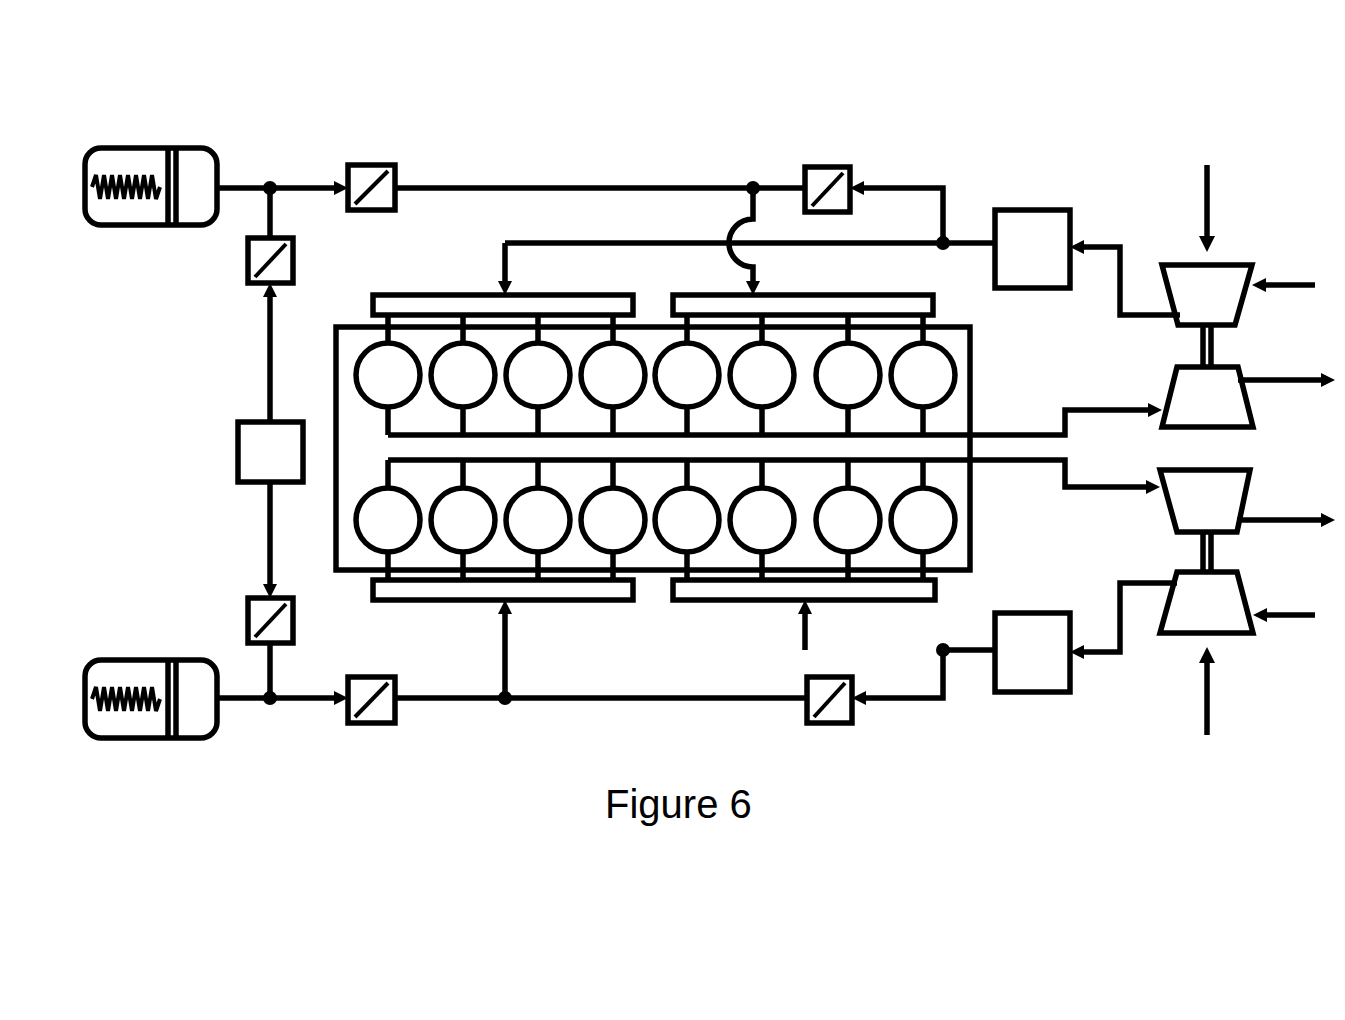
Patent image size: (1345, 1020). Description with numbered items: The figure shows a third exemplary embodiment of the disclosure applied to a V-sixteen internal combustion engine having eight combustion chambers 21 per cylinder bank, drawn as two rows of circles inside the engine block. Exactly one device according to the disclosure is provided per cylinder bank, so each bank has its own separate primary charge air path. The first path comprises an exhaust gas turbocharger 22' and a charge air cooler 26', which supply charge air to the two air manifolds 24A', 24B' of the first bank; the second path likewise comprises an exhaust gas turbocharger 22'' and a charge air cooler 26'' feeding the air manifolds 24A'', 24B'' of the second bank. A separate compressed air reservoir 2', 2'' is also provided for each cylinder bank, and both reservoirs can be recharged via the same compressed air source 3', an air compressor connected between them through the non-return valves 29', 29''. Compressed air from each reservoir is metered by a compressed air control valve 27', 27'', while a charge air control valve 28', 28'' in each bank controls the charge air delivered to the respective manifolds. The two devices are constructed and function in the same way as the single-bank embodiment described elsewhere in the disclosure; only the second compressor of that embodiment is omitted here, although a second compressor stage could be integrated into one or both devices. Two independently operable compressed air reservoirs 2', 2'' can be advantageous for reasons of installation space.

The compressed air reservoir 2' is at (109, 160).
The compressed air reservoir 2'' is at (109, 659).
The compressed air source 3' is at (270, 452).
The combustion chamber 21 is at (933, 531).
The exhaust gas turbocharger 22' is at (1221, 208).
The exhaust gas turbocharger 22'' is at (1224, 691).
The air manifold 24A' is at (494, 288).
The air manifold 24B' is at (803, 301).
The air manifold 24A'' is at (503, 610).
The air manifold 24B'' is at (804, 598).
The charge air cooler 26' is at (989, 212).
The charge air cooler 26'' is at (1021, 684).
The compressed air control valve 27' is at (325, 156).
The compressed air control valve 27'' is at (405, 725).
The charge air control valve 28' is at (773, 154).
The charge air control valve 28'' is at (767, 676).
The non-return valve 29' is at (230, 282).
The non-return valve 29'' is at (218, 593).